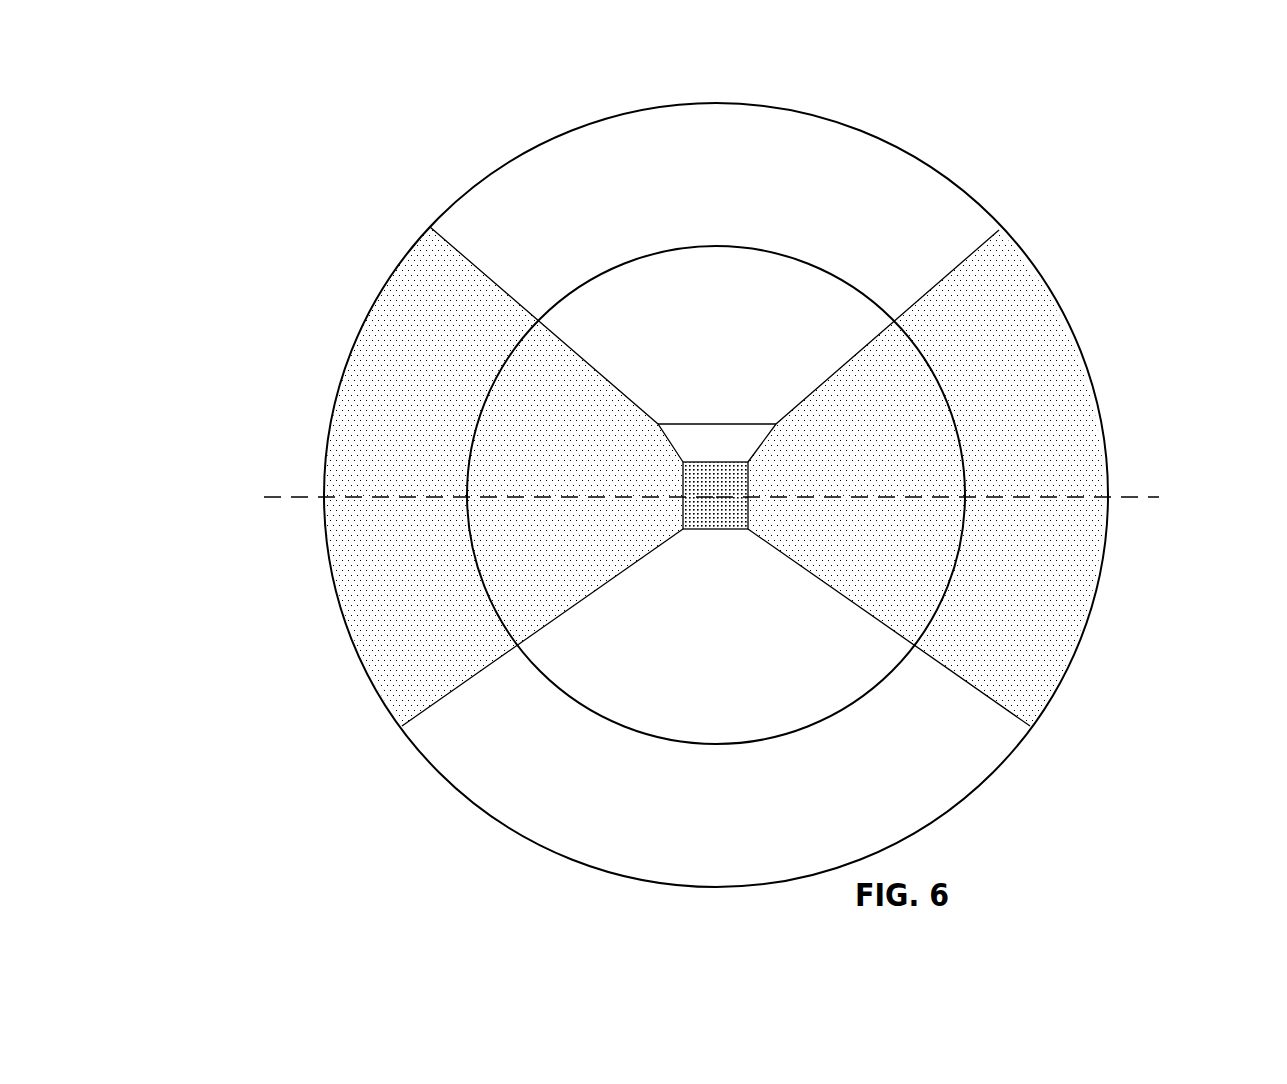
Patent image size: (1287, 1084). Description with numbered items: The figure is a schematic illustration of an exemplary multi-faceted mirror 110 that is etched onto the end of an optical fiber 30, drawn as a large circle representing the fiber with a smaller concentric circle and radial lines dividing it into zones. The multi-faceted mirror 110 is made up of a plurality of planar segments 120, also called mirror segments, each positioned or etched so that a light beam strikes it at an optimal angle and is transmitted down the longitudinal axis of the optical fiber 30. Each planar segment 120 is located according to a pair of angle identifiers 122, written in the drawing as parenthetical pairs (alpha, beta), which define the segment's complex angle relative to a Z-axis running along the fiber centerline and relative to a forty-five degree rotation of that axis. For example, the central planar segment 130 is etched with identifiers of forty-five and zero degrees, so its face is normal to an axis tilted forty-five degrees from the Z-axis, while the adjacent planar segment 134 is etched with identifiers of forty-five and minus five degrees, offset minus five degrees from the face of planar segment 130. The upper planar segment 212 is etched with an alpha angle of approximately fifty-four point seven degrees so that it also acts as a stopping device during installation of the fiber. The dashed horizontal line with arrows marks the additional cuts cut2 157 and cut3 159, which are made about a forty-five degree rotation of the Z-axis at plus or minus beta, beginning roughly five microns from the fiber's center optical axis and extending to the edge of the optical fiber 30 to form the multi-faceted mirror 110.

The optical fiber 30 is at (1060, 227).
The multi-faceted mirror 110 is at (875, 130).
The planar segments 120 is at (553, 202).
The angle identifiers 122 is at (742, 307).
The planar segment 130 is at (742, 463).
The planar segment 134 is at (368, 388).
The planar segment 212 is at (675, 157).
The cut2 157 is at (981, 503).
The cut3 159 is at (446, 503).